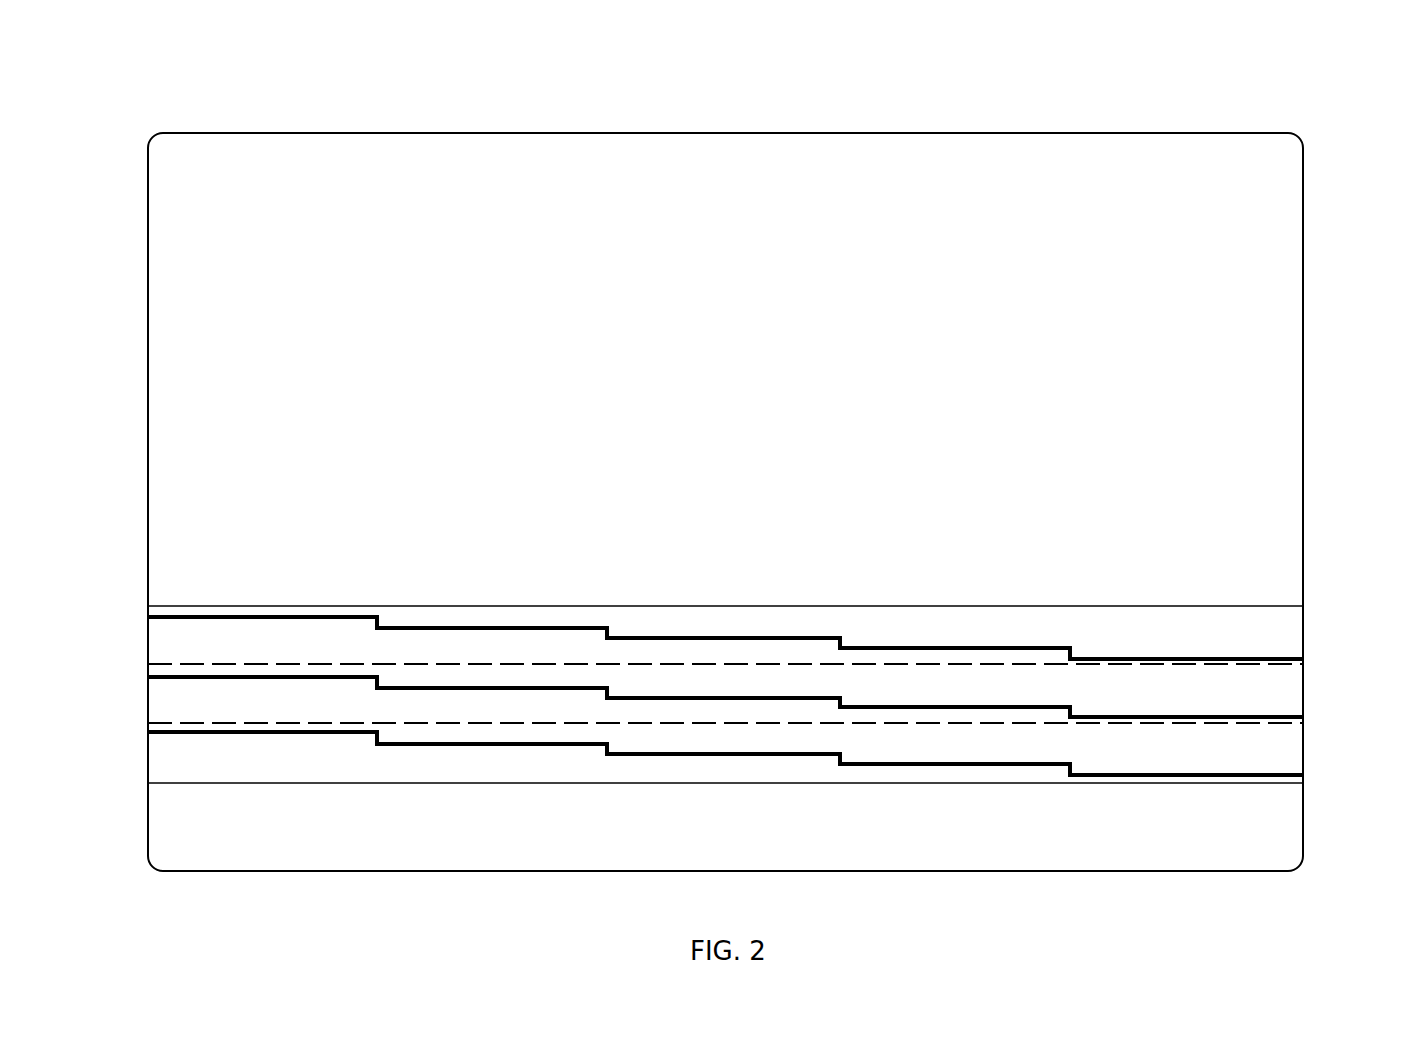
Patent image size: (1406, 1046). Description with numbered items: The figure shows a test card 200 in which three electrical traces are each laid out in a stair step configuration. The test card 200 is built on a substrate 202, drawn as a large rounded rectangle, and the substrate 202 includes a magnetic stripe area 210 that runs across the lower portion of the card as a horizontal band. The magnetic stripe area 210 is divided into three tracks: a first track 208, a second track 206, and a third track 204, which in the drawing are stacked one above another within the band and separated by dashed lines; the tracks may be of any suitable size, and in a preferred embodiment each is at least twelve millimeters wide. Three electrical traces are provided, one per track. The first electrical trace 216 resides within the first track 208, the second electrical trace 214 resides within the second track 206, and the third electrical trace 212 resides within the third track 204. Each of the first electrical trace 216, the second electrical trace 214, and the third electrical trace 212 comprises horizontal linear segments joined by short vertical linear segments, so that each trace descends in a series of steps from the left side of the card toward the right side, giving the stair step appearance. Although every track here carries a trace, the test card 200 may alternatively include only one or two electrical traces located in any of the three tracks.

The test card 200 is at (146, 58).
The substrate 202 is at (147, 200).
The third track 204 is at (147, 634).
The second track 206 is at (147, 711).
The first track 208 is at (147, 759).
The magnetic stripe area 210 is at (1226, 606).
The third electrical trace 212 is at (1303, 661).
The second electrical trace 214 is at (1303, 719).
The first electrical trace 216 is at (1303, 777).